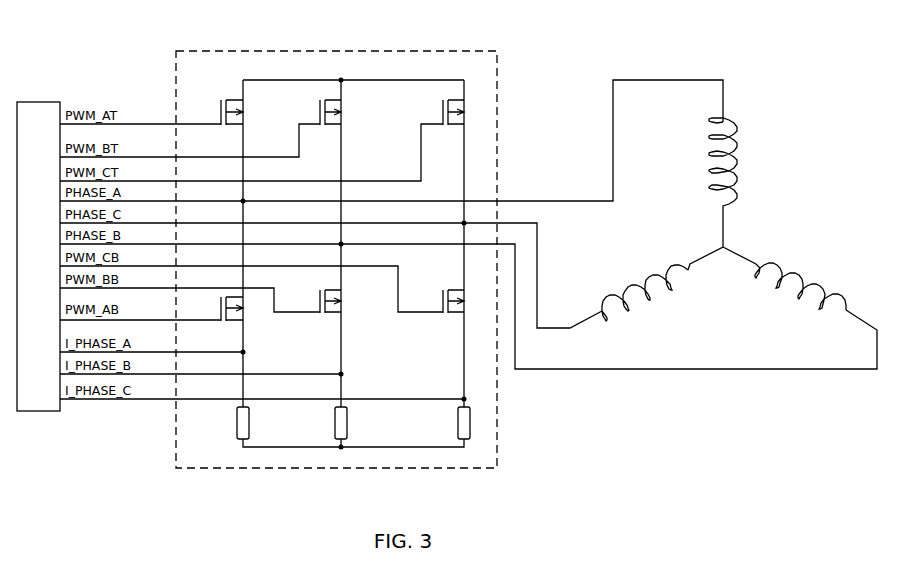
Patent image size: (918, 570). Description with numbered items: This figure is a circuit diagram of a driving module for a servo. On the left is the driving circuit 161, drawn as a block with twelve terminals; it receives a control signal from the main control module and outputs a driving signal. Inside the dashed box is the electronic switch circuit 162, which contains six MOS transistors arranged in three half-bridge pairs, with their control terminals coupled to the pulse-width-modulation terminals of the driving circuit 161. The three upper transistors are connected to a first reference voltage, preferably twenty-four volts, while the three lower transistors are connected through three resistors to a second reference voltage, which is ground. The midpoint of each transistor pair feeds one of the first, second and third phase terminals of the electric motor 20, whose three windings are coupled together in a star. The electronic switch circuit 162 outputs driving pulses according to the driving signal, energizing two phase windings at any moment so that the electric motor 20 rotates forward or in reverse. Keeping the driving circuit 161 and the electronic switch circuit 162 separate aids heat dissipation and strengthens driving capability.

The driving circuit 161 is at (38, 101).
The electronic switch circuit 162 is at (379, 51).
The electric motor 20 is at (735, 236).